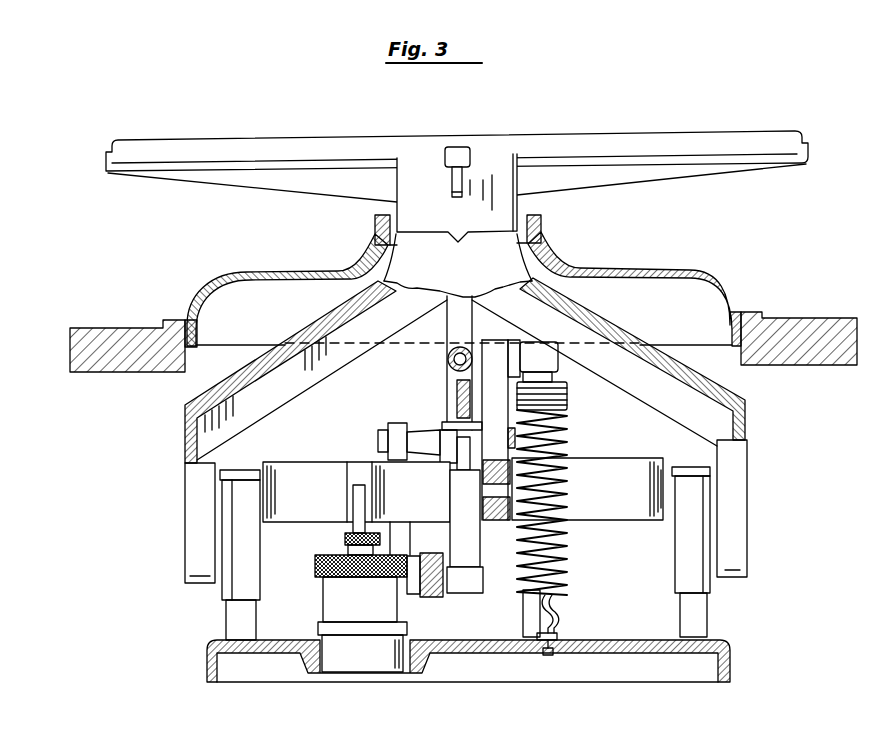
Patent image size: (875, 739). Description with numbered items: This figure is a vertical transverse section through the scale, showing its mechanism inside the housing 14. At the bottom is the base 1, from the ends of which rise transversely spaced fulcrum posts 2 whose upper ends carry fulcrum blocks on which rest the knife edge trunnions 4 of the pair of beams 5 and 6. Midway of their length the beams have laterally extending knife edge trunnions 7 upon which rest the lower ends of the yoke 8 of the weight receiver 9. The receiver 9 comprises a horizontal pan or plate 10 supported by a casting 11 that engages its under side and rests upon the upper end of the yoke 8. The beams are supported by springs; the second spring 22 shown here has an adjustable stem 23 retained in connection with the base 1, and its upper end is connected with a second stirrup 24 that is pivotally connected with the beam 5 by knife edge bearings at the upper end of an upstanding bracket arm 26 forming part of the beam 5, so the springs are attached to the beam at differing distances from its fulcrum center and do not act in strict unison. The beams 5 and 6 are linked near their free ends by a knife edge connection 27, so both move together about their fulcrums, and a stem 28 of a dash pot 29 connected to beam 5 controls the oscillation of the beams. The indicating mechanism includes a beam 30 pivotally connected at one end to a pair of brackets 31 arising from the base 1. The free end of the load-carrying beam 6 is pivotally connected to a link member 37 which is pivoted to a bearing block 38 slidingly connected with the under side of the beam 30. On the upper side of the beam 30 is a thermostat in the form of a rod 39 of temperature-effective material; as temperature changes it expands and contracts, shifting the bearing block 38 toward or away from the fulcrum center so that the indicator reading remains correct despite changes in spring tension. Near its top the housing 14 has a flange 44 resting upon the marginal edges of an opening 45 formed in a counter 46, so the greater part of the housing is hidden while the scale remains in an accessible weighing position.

The base 1 is at (652, 627).
The fulcrum posts 2 is at (235, 617).
The knife edge trunnions 4 is at (218, 567).
The beam 5 is at (626, 507).
The beam 6 is at (432, 597).
The knife edge trunnions 7 is at (272, 503).
The yoke 8 is at (624, 372).
The weight receiver 9 is at (548, 207).
The horizontal pan or plate 10 is at (573, 138).
The casting 11 is at (410, 192).
The housing 14 is at (208, 291).
The second spring 22 is at (560, 451).
The adjustable stem 23 is at (555, 625).
The second stirrup 24 is at (540, 361).
The upstanding bracket arm 26 is at (490, 375).
The knife edge connection 27 is at (468, 543).
The stem 28 is at (354, 527).
The dash pot 29 is at (333, 597).
The beam 30 is at (457, 393).
The brackets 31 is at (400, 540).
The link member 37 is at (458, 448).
The bearing block 38 is at (430, 427).
The rod 39 is at (449, 359).
The flange 44 is at (757, 318).
The opening 45 is at (190, 354).
The counter 46 is at (117, 333).